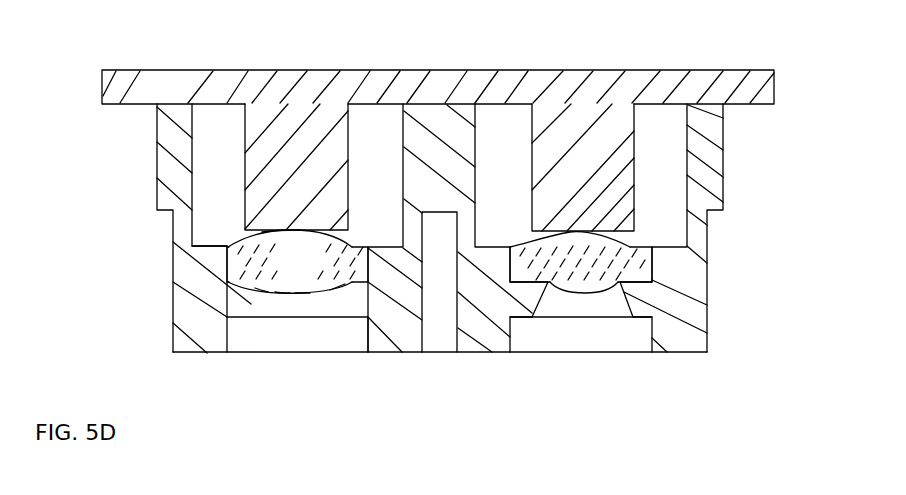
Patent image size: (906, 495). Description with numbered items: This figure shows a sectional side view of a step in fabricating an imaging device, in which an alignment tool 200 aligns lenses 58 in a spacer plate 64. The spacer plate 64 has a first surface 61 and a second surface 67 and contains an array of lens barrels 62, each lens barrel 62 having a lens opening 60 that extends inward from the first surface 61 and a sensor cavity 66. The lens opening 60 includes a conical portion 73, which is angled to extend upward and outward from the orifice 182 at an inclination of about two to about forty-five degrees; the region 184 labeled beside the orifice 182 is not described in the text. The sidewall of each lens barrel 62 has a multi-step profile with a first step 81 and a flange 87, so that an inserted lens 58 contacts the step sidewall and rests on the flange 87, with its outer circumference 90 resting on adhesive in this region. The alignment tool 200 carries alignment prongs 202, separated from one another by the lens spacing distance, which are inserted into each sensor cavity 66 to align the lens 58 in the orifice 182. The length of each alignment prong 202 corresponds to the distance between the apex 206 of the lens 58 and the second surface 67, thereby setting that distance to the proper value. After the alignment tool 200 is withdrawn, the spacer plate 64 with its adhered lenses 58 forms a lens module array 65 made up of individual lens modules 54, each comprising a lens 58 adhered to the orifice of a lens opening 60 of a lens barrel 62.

The lens module 54 is at (110, 143).
The lens 58 is at (284, 272).
The lens opening 60 is at (284, 298).
The first surface 61 is at (182, 361).
The lens barrel 62 is at (147, 246).
The spacer plate 64 is at (723, 156).
The lens module array 65 is at (734, 375).
The sensor cavity 66 is at (218, 124).
The second surface 67 is at (427, 96).
The conical portion 73 is at (341, 284).
The first step 81 is at (208, 245).
The flange 87 is at (356, 276).
The outer circumference 90 is at (337, 285).
The orifice 182 is at (303, 306).
The seal edge 184 is at (262, 288).
The alignment tool 200 is at (182, 98).
The alignment prong 202 is at (294, 177).
The apex 206 is at (297, 230).